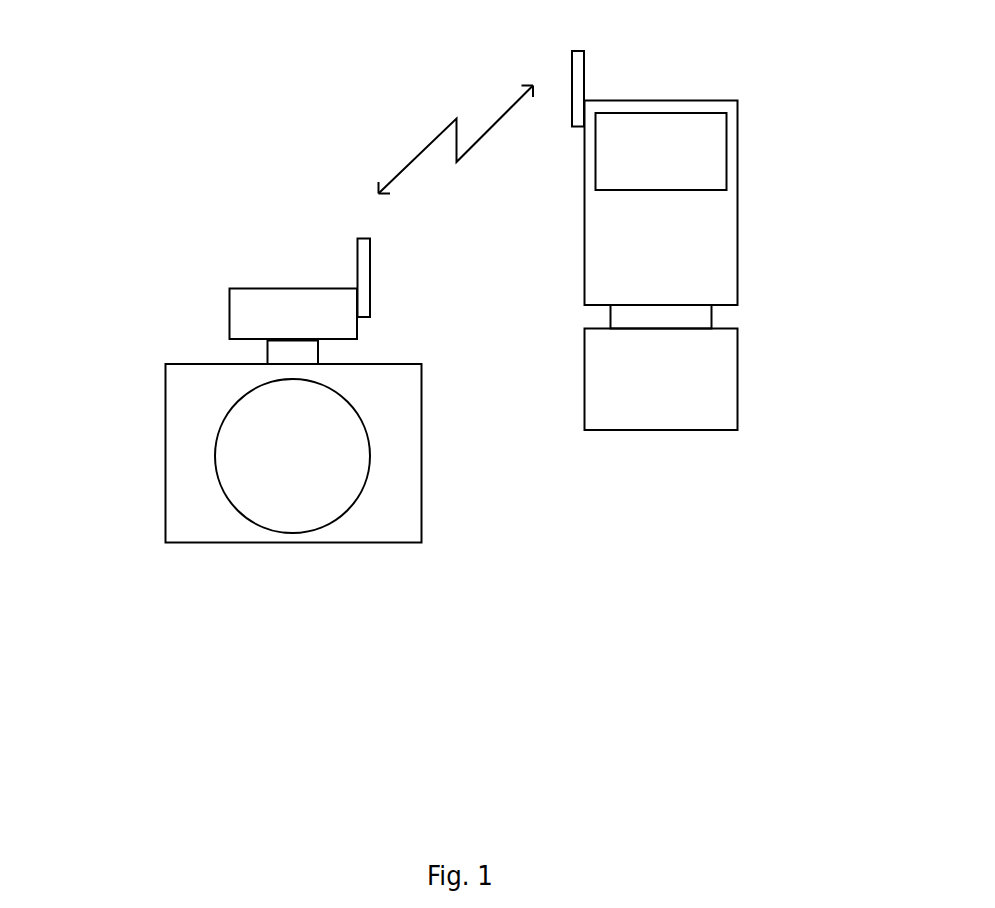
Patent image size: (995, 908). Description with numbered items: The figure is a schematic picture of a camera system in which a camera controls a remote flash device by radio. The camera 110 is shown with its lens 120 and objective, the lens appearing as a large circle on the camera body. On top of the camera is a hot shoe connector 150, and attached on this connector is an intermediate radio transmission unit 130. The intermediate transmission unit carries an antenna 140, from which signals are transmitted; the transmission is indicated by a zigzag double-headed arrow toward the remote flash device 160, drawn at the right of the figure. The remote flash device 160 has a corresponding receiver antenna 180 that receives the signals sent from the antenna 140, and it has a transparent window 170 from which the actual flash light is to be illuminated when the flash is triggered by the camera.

The camera 110 is at (197, 416).
The lens 120 is at (284, 518).
The intermediate radio transmission unit 130 is at (247, 315).
The antenna 140 is at (357, 268).
The hot shoe connector 150 is at (267, 356).
The remote flash device 160 is at (705, 238).
The transparent window 170 is at (728, 132).
The receiver antenna 180 is at (584, 70).